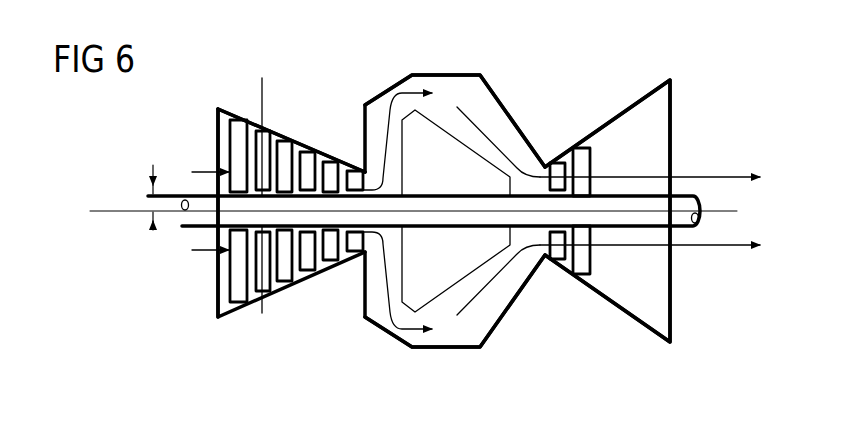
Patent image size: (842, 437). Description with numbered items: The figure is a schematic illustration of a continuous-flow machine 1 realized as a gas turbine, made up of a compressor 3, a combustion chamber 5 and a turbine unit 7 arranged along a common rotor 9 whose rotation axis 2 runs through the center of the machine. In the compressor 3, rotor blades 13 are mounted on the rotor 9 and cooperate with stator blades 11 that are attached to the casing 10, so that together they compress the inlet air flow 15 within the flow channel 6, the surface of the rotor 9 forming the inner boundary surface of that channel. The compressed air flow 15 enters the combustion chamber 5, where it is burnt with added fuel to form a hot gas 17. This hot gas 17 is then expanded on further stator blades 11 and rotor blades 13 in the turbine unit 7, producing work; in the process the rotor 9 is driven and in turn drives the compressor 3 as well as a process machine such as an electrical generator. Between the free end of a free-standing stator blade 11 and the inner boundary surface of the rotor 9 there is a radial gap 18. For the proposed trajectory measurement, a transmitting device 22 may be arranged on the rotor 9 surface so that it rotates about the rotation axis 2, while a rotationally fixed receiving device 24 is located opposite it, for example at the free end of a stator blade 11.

The continuous-flow machine 1 is at (320, 338).
The rotation axis 2 is at (120, 210).
The compressor 3 is at (289, 140).
The combustion chamber 5 is at (445, 74).
The flow channel 6 is at (217, 128).
The turbine unit 7 is at (650, 138).
The rotor 9 is at (183, 228).
The casing 10 is at (240, 108).
The stator blades 11 is at (313, 158).
The rotor blades 13 is at (306, 157).
The inlet air flow 15 is at (206, 170).
The hot gas 17 is at (733, 176).
The radial gap 18 is at (147, 193).
The transmitting device 22 is at (261, 287).
The receiving device 24 is at (261, 119).